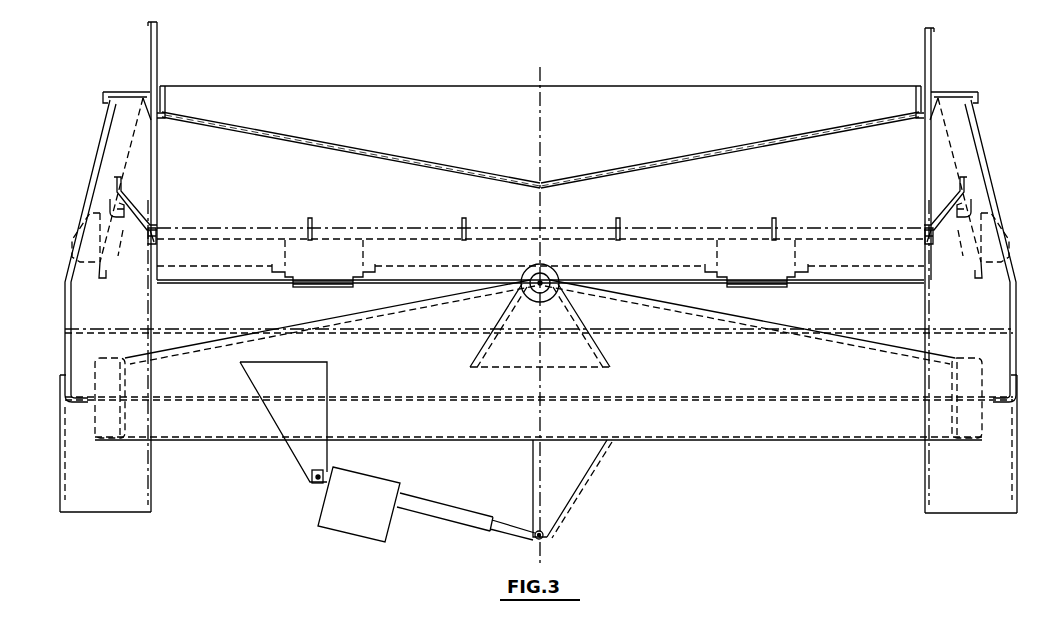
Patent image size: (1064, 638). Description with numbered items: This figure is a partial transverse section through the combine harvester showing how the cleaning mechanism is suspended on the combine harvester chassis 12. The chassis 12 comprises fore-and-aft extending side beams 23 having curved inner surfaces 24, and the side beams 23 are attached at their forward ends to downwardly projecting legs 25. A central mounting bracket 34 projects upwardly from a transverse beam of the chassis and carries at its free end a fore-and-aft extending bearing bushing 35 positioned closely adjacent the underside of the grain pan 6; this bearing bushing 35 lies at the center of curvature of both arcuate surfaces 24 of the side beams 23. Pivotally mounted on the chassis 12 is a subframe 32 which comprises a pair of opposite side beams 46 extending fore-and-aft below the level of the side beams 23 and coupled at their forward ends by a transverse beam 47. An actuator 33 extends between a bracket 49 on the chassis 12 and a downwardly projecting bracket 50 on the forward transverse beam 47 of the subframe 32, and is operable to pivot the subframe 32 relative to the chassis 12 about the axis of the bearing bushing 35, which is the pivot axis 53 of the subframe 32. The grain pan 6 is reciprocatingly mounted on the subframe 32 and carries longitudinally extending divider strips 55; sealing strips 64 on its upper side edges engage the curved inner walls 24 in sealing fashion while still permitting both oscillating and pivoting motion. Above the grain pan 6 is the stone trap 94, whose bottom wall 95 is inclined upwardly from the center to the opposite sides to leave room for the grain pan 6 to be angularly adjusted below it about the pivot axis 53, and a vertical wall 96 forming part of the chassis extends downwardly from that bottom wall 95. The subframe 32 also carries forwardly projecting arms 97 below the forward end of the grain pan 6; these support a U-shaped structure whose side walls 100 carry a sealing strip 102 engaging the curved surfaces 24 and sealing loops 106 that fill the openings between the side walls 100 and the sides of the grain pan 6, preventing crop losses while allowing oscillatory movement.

The grain pan 6 is at (676, 228).
The combine harvester chassis 12 is at (153, 480).
The side beams 23 is at (97, 151).
The curved inner surfaces 24 is at (135, 130).
The downwardly projecting legs 25 is at (60, 498).
The subframe 32 is at (228, 437).
The actuator 33 is at (441, 518).
The central mounting bracket 34 is at (581, 313).
The bearing bushing 35 is at (553, 296).
The side beams of subframe 46 is at (122, 424).
The transverse beam 47 is at (712, 442).
The bracket 49 is at (297, 459).
The downwardly projecting bracket 50 is at (572, 496).
The pivot axis 53 is at (519, 285).
The divider strips 55 is at (313, 220).
The sealing strips 64 is at (119, 182).
The stone trap 94 is at (608, 144).
The bottom wall 95 is at (791, 142).
The vertical wall 96 is at (415, 204).
The forwardly projecting arms 97 is at (306, 288).
The side walls 100 is at (145, 240).
The sealing strip 102 is at (110, 201).
The sealing loops 106 is at (153, 229).